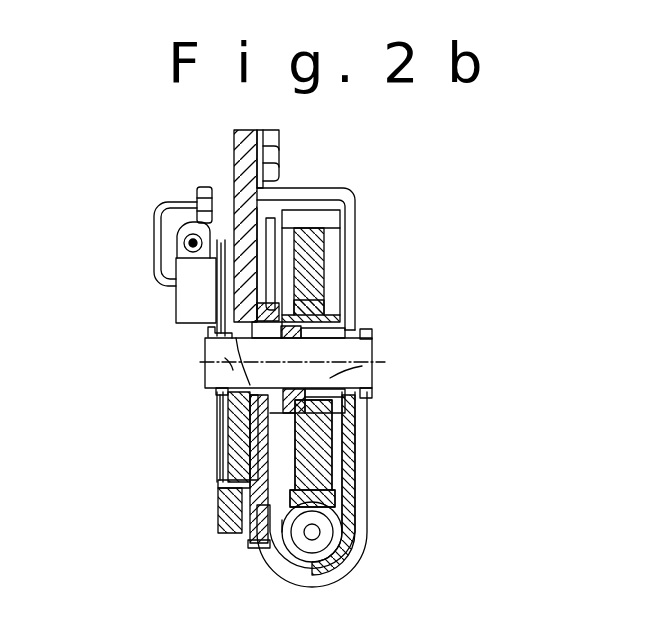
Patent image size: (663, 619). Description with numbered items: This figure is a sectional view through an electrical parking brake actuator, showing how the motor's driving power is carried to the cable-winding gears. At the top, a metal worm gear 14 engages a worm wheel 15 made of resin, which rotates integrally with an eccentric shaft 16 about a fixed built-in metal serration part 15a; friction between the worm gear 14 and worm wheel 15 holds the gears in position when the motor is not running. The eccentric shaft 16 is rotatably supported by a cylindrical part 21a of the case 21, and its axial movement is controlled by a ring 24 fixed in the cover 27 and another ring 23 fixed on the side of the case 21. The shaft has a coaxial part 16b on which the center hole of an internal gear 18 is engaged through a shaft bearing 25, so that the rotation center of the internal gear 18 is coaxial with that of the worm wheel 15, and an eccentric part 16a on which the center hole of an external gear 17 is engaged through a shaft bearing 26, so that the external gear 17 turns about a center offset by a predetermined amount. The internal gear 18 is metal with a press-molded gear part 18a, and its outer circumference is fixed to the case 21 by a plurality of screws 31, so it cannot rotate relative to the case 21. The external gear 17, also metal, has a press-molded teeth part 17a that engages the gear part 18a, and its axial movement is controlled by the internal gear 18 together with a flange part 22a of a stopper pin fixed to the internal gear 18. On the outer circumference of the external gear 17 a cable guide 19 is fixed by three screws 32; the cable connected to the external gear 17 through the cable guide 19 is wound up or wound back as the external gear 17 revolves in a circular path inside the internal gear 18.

The worm gear 14 is at (348, 519).
The worm wheel 15 is at (343, 234).
The serration part 15a is at (325, 298).
The eccentric shaft 16 is at (355, 368).
The eccentric part 16a is at (233, 345).
The coaxial part 16b is at (340, 424).
The external gear 17 is at (222, 530).
The teeth part 17a is at (226, 478).
The internal gear 18 is at (250, 546).
The gear part 18a is at (222, 500).
The cable guide 19 is at (172, 236).
The case 21 is at (352, 470).
The cylindrical part 21a is at (358, 391).
The flange part 22a is at (229, 452).
The ring 23 is at (360, 327).
The ring 24 is at (220, 390).
The shaft bearing 25 is at (357, 352).
The shaft bearing 26 is at (226, 364).
The cover 27 is at (226, 483).
The screw 31 is at (280, 150).
The screw 32 is at (199, 194).